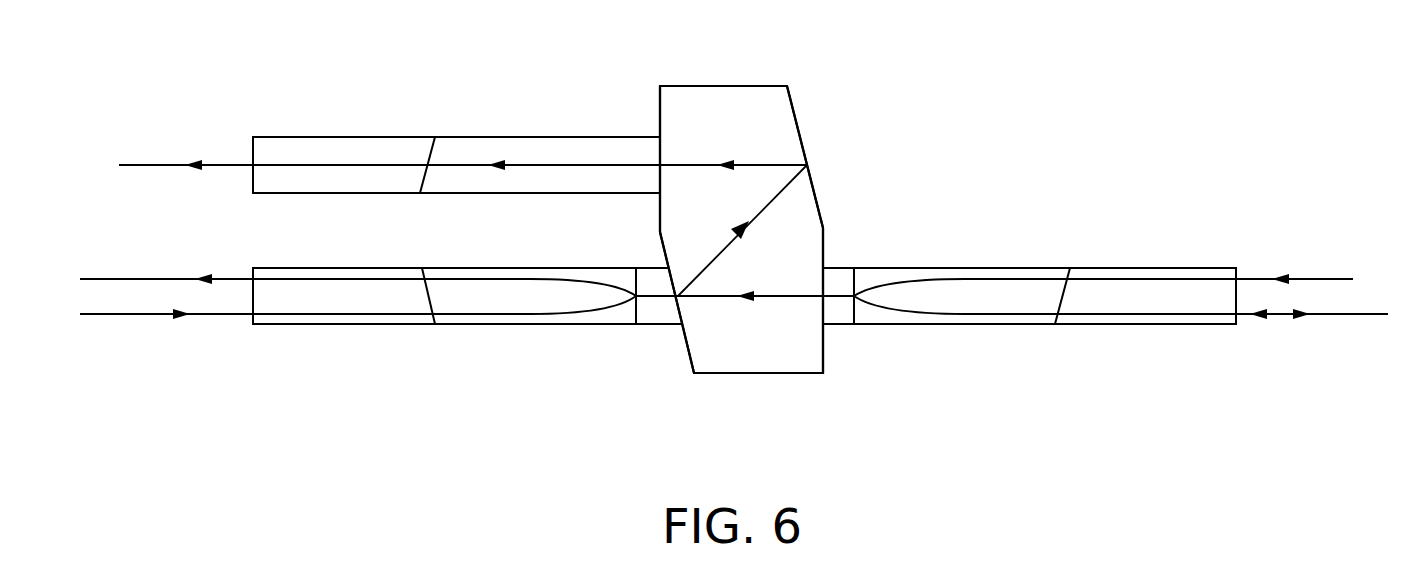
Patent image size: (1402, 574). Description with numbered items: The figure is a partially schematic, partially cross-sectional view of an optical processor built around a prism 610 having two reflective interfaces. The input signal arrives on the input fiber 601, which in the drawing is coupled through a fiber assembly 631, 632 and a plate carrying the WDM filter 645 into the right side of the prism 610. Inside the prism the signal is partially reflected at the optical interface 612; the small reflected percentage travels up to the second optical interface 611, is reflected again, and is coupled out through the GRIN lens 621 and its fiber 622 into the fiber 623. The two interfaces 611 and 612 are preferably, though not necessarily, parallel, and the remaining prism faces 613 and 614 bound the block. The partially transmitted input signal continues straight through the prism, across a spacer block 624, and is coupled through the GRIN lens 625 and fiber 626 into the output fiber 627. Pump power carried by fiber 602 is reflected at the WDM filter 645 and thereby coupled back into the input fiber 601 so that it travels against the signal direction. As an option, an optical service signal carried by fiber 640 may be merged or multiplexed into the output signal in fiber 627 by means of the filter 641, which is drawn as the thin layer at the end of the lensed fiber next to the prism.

The input fiber 601 is at (1325, 315).
The pump fiber 602 is at (1327, 275).
The prism 610 is at (727, 85).
The optical interface 611 is at (810, 177).
The optical interface 612 is at (687, 345).
The side surface of prism 613 is at (658, 110).
The side surface of prism 614 is at (823, 347).
The GRIN lens 621 is at (513, 137).
The optical fiber 622 is at (343, 137).
The fiber 623 is at (167, 162).
The glass block 624 is at (660, 328).
The GRIN lens 625 is at (472, 327).
The optical fiber 626 is at (343, 327).
The output fiber 627 is at (177, 278).
The lensed fiber 631 is at (965, 267).
The optical fiber 632 is at (1153, 267).
The fiber 640 is at (158, 318).
The filter 641 is at (635, 327).
The WDM filter 645 is at (838, 268).